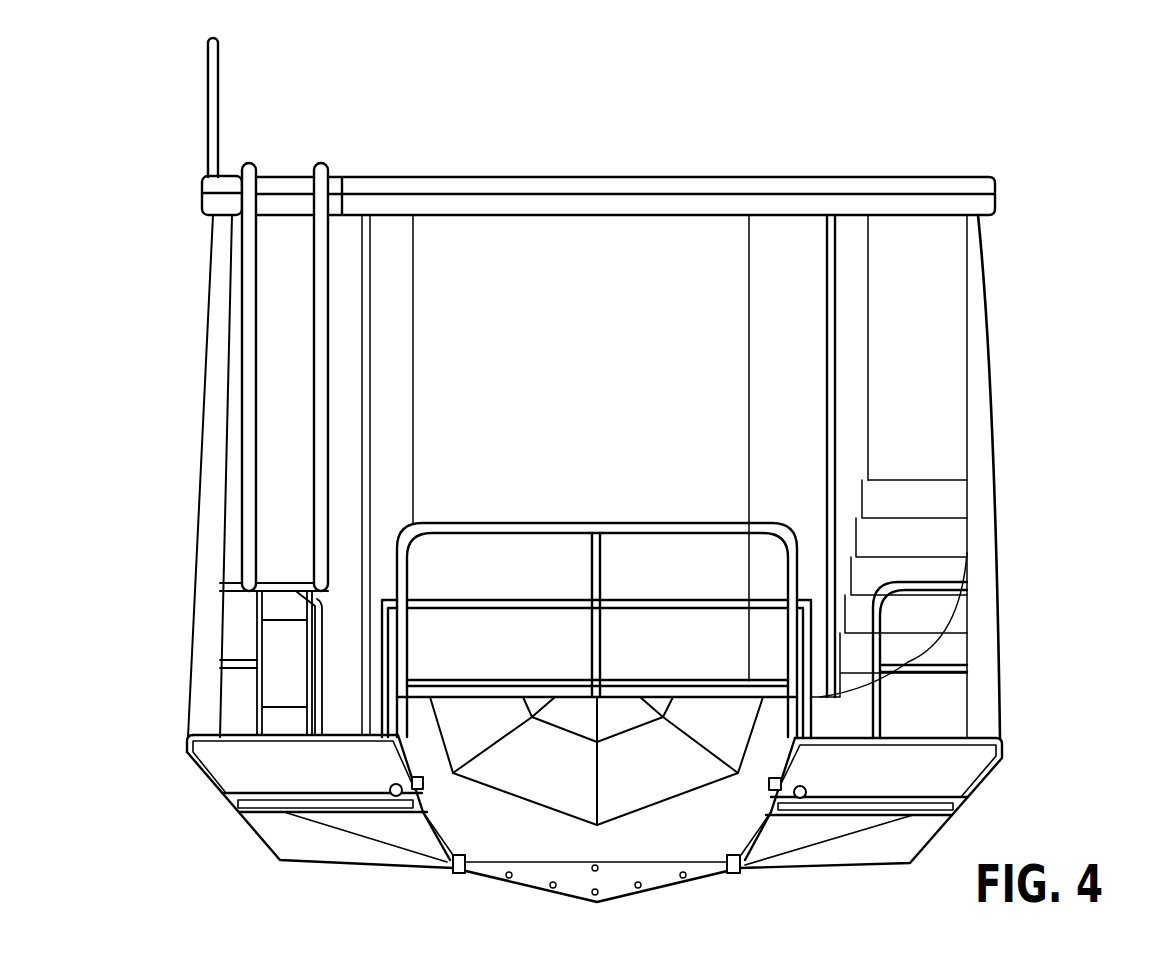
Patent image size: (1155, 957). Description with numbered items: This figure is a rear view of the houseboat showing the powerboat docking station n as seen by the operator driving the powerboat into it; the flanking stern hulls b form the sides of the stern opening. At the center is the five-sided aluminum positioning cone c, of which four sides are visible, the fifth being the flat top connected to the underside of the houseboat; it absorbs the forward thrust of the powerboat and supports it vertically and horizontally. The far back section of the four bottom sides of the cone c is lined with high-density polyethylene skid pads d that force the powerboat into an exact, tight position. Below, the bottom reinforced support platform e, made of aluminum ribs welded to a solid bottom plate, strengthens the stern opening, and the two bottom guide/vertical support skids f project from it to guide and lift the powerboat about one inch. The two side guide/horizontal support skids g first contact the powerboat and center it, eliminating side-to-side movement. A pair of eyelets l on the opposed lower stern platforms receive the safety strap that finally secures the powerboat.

The side hull / pontoon b is at (1002, 743).
The five-sided positioning cone c is at (556, 778).
The high-density polyethylene skid pads d is at (627, 730).
The bottom reinforced support platform e is at (655, 878).
The bottom guide/vertical support skids f is at (459, 873).
The side guide/horizontal support skids g is at (412, 781).
The eyelets l is at (397, 797).
The docking station n is at (525, 847).